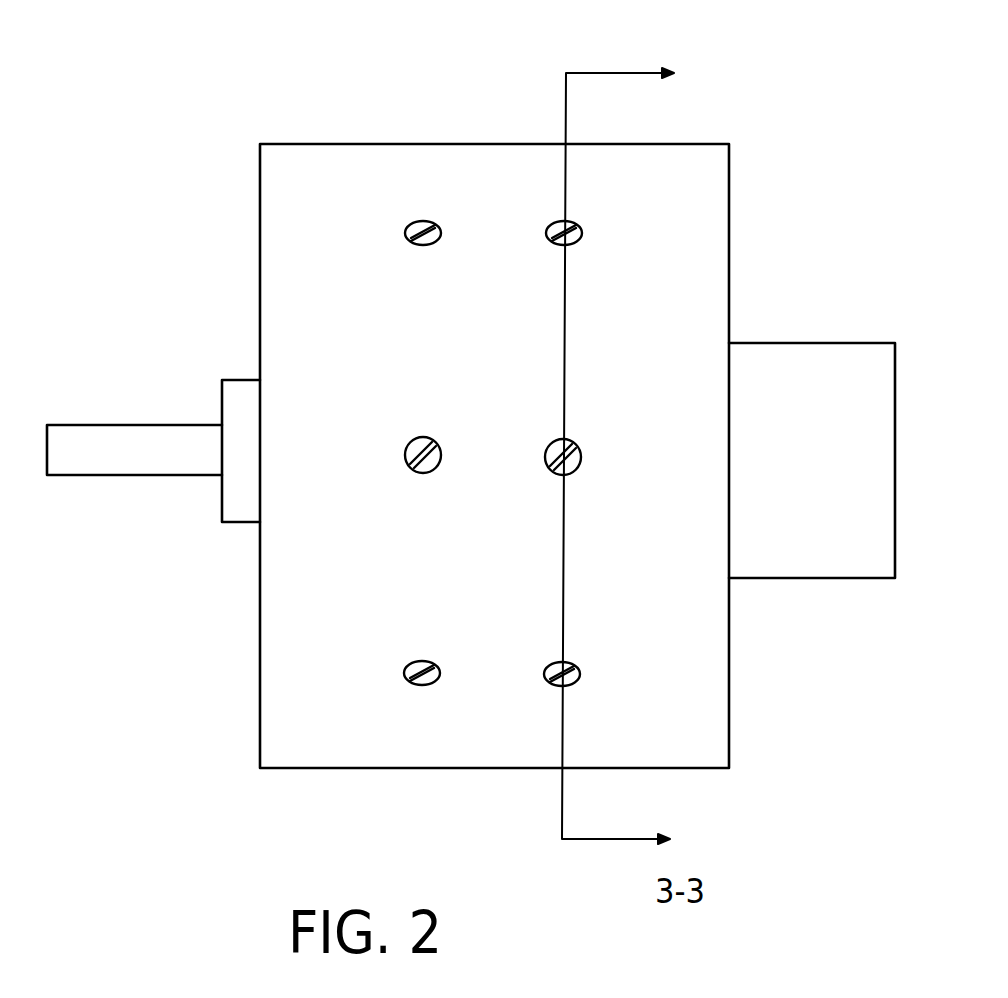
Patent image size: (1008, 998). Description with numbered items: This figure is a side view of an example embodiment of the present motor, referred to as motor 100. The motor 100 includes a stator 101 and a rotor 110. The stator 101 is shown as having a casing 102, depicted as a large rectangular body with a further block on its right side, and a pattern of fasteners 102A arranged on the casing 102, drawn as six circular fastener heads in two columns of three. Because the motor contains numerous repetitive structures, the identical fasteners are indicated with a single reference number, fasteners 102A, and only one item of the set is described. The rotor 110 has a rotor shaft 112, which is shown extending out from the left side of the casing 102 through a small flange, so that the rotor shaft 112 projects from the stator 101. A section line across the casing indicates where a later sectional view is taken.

The motor 100 is at (232, 75).
The stator 101 is at (237, 268).
The casing 102 is at (380, 363).
The fasteners 102A is at (545, 236).
The rotor 110 is at (118, 400).
The rotor shaft 112 is at (146, 470).